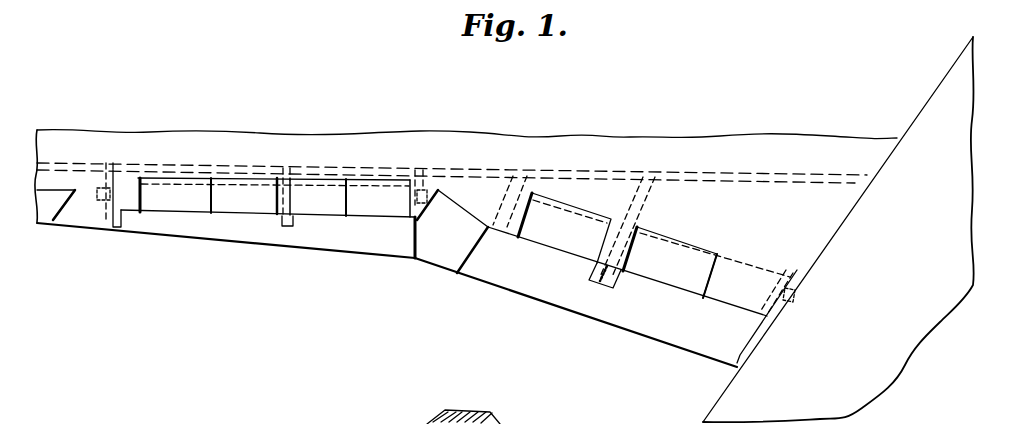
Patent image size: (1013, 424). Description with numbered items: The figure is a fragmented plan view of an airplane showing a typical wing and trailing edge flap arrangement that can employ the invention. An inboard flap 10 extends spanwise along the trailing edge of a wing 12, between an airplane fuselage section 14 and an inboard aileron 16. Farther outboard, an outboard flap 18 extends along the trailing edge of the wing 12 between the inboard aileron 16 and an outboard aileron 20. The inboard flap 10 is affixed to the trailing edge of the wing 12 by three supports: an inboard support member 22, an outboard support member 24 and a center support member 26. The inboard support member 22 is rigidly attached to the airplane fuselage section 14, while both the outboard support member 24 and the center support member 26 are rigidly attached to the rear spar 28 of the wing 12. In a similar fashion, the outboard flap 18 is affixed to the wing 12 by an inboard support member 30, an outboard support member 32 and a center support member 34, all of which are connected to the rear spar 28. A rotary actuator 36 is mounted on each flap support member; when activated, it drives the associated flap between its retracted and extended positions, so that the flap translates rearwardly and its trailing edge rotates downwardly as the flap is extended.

The inboard flap 10 is at (638, 325).
The wing 12 is at (628, 146).
The airplane fuselage section 14 is at (737, 388).
The inboard aileron 16 is at (440, 253).
The outboard flap 18 is at (208, 234).
The outboard aileron 20 is at (98, 230).
The inboard support member 22 is at (795, 270).
The outboard support member 24 is at (513, 193).
The center support member 26 is at (647, 207).
The rear spar 28 is at (718, 175).
The inboard support member 30 is at (417, 170).
The outboard support member 32 is at (113, 163).
The center support member 34 is at (290, 172).
The rotary actuator 36 is at (100, 192).